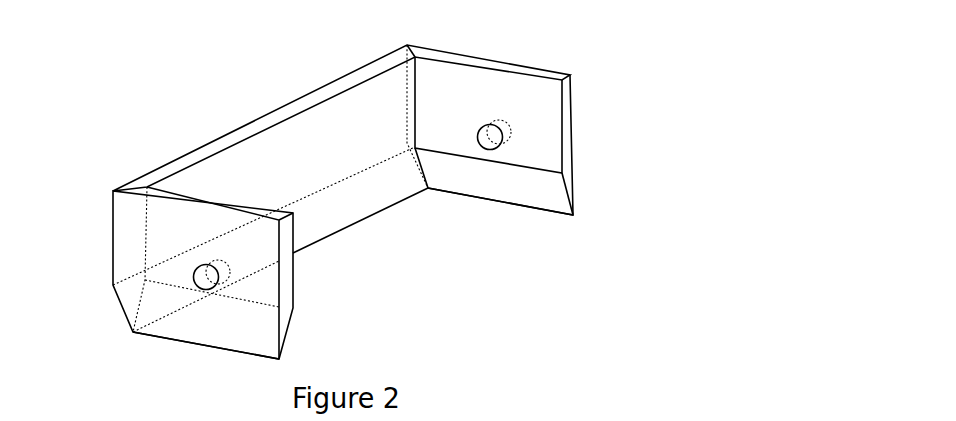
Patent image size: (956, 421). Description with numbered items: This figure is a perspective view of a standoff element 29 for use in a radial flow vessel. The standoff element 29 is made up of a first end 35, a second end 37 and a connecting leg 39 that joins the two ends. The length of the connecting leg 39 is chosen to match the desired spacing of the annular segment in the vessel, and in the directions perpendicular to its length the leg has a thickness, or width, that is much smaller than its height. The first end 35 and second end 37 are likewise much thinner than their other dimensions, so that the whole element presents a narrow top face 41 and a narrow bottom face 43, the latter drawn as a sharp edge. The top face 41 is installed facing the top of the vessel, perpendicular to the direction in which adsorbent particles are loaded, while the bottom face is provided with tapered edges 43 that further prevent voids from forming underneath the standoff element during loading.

The standoff element 29 is at (408, 206).
The first end 35 is at (472, 103).
The second end 37 is at (193, 323).
The connecting leg 39 is at (320, 177).
The top face 41 is at (230, 140).
The bottom face / tapered edges 43 is at (280, 357).